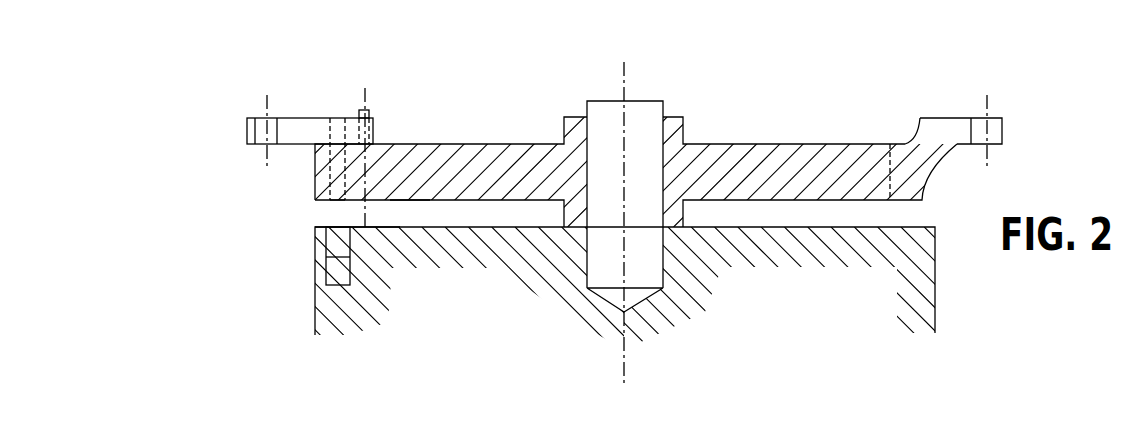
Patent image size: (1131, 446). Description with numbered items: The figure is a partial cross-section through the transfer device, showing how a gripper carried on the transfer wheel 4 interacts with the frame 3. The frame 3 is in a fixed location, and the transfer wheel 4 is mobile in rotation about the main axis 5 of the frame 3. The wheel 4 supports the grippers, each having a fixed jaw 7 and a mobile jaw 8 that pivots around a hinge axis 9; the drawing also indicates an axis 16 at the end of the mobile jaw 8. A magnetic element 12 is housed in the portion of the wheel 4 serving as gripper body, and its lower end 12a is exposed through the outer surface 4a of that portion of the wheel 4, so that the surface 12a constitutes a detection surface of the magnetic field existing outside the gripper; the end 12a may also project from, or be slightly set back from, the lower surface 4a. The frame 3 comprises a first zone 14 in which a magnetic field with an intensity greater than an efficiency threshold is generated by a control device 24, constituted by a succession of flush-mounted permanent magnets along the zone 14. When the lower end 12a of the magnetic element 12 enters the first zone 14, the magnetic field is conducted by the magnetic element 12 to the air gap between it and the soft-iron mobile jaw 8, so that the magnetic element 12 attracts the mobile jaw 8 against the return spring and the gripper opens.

The frame 3 is at (792, 310).
The transfer wheel 4 is at (795, 150).
The outer surface of the wheel 4a is at (390, 199).
The main axis 5 is at (628, 78).
The fixed jaw 7 is at (942, 127).
The mobile jaw 8 is at (310, 127).
The hinge axis 9 is at (368, 97).
The magnetic element 12 is at (338, 178).
The lower end of the magnetic element 12a is at (338, 216).
The first zone 14 is at (337, 225).
The axis 16 is at (262, 107).
The control device 24 is at (325, 258).